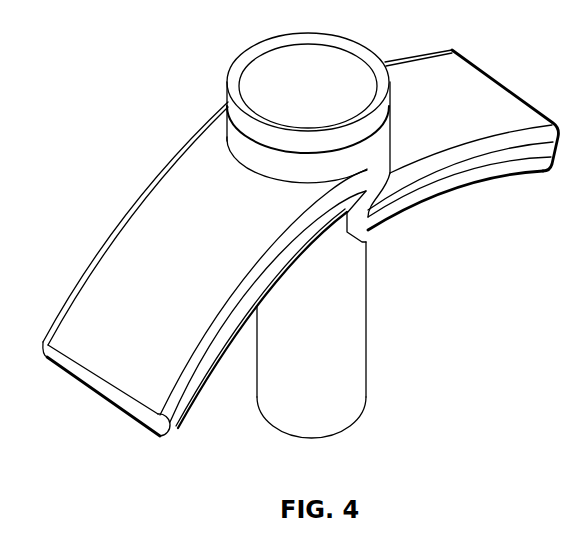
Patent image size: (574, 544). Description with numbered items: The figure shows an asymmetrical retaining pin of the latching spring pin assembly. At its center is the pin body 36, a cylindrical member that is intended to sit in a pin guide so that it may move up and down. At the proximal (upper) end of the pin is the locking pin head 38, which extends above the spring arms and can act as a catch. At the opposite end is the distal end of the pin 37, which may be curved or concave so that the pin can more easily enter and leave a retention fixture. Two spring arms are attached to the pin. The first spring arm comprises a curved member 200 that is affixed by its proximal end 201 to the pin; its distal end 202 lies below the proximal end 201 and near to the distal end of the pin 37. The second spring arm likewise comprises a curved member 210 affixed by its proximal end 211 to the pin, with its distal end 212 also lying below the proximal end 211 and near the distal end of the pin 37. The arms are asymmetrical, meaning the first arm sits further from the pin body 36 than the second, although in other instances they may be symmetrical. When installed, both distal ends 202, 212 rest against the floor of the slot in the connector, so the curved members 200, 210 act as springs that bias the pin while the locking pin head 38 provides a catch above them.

The curved member 200 is at (301, 221).
The proximal end 201 is at (252, 208).
The distal end 202 is at (143, 346).
The distal end 212 is at (507, 115).
The curved member 210 is at (177, 213).
The proximal end 211 is at (405, 145).
The locking pin head 38 is at (322, 95).
The pin body 36 is at (320, 353).
The distal end of the pin 37 is at (371, 427).